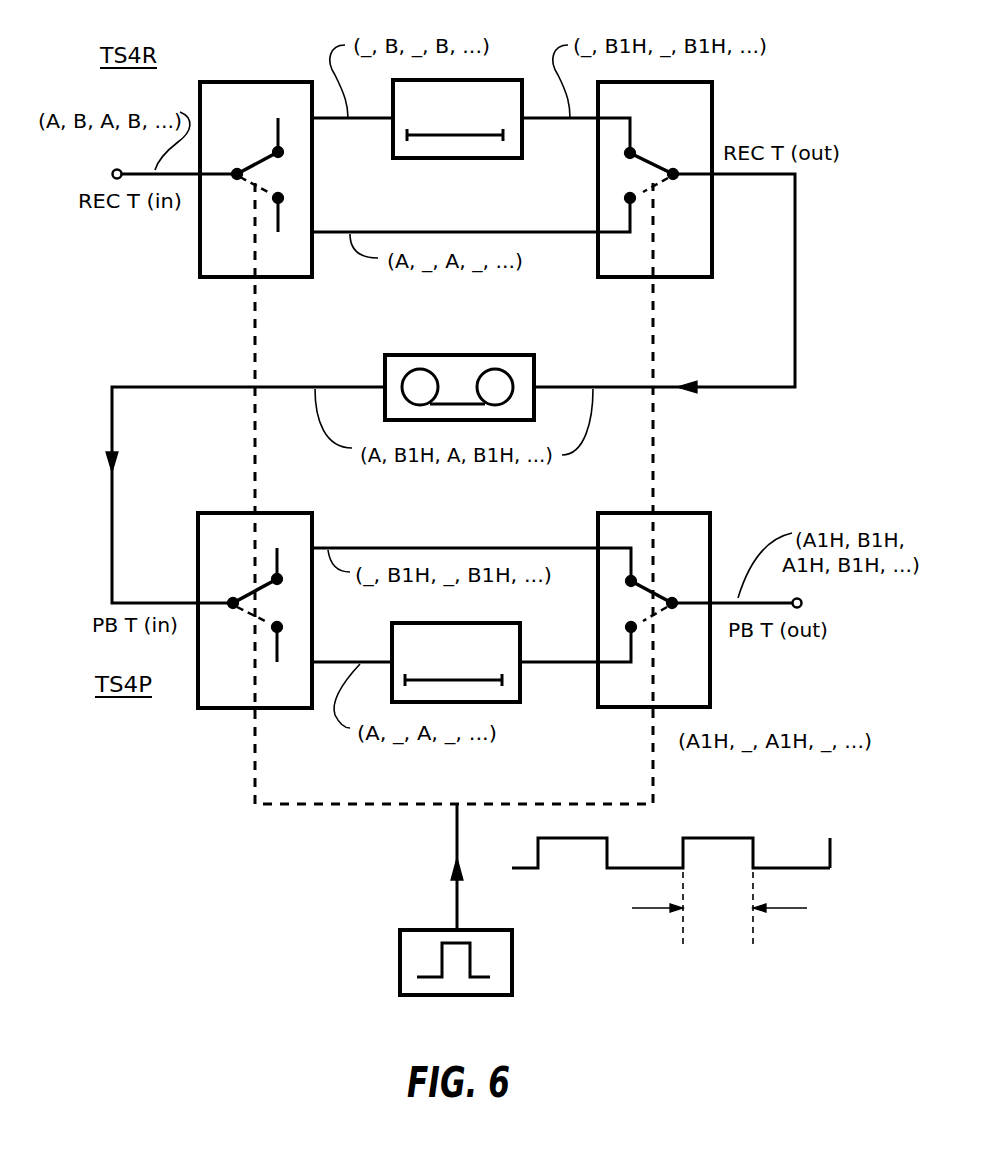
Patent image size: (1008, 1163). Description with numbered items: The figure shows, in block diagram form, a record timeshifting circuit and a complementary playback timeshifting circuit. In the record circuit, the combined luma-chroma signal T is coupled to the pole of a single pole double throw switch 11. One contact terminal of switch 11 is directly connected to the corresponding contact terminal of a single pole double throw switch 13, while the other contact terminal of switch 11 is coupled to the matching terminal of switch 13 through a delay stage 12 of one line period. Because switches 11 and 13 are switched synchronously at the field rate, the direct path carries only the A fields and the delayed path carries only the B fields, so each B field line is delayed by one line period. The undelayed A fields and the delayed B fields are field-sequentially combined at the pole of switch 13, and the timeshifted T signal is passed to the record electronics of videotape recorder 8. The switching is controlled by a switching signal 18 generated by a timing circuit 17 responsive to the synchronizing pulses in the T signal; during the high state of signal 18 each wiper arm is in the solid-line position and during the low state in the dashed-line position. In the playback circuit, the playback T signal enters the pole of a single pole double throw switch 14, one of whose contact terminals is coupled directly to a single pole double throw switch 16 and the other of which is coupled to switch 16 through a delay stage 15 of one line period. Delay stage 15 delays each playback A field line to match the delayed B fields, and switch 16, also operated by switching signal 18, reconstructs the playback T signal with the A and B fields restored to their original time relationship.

The videotape recorder 8 is at (470, 387).
The single pole double throw switch 11 is at (273, 179).
The delay stage 12 is at (472, 119).
The single pole double throw switch 13 is at (671, 179).
The single pole double throw switch 14 is at (240, 610).
The 1 H delay stage 15 is at (471, 662).
The single pole double throw switch 16 is at (669, 610).
The timing circuit 17 is at (440, 962).
The switching signal 18 is at (701, 912).